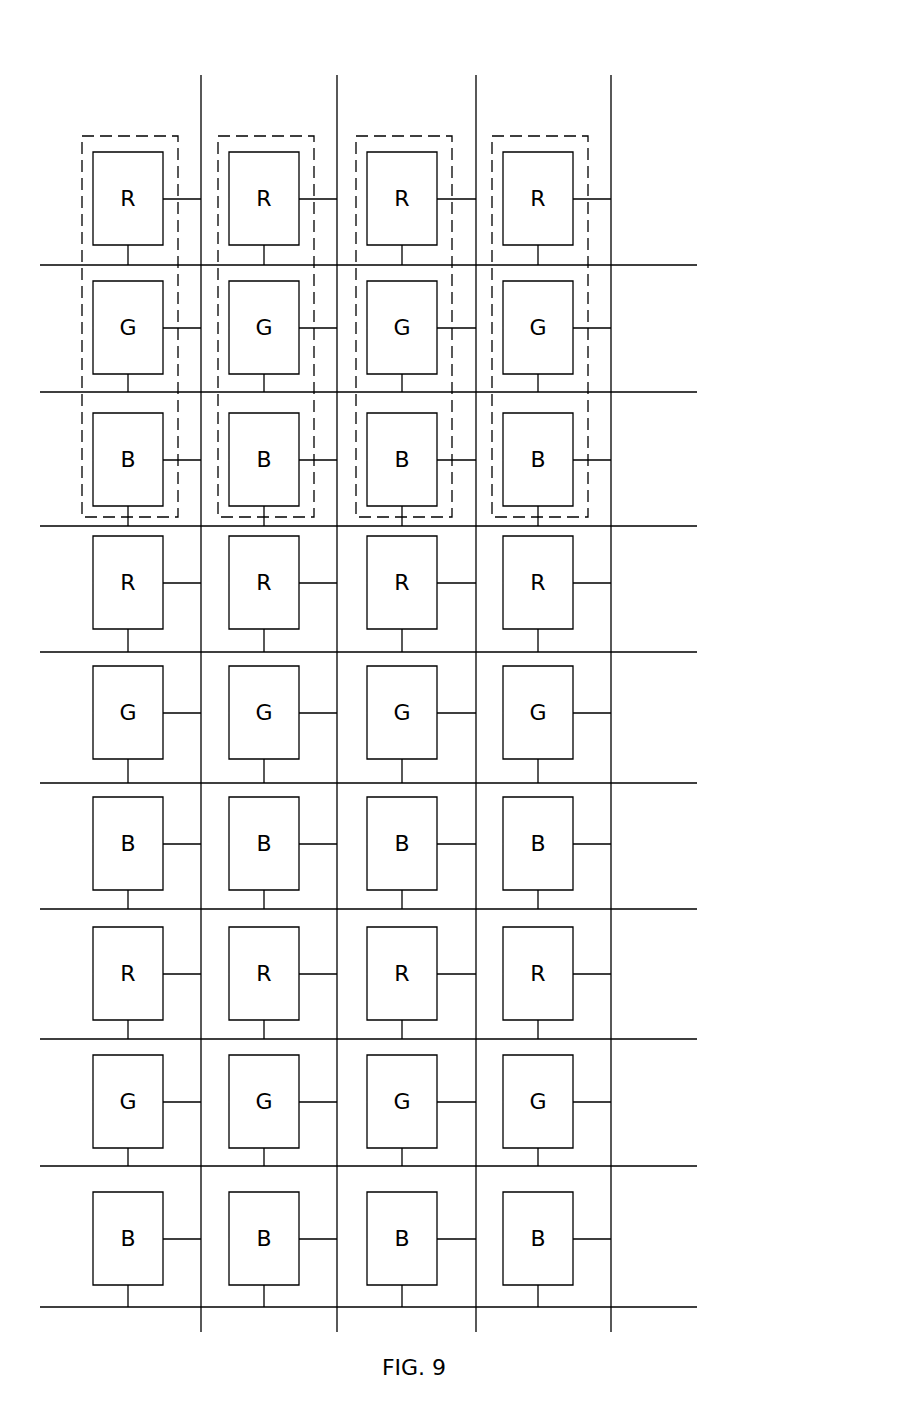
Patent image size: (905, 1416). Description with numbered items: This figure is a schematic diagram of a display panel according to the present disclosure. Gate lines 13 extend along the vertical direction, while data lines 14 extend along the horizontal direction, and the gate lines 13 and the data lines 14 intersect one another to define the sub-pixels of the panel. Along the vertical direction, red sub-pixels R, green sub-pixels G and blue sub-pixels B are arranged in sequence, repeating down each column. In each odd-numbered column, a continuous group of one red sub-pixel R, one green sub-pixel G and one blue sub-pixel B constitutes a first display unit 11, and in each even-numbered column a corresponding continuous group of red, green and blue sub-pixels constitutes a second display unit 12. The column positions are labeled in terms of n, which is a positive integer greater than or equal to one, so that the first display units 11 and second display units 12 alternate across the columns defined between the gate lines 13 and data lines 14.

The first display unit 11 is at (118, 146).
The second display unit 12 is at (254, 146).
The gate lines 13 is at (160, 52).
The data lines 14 is at (686, 245).